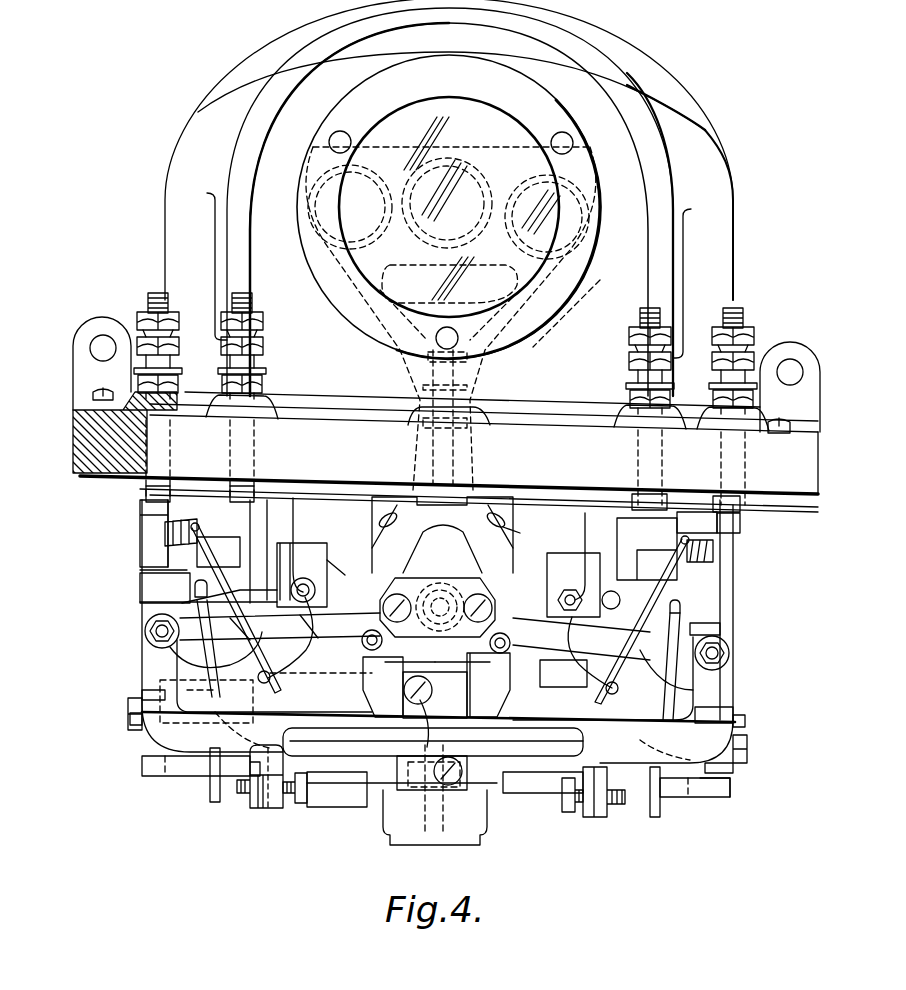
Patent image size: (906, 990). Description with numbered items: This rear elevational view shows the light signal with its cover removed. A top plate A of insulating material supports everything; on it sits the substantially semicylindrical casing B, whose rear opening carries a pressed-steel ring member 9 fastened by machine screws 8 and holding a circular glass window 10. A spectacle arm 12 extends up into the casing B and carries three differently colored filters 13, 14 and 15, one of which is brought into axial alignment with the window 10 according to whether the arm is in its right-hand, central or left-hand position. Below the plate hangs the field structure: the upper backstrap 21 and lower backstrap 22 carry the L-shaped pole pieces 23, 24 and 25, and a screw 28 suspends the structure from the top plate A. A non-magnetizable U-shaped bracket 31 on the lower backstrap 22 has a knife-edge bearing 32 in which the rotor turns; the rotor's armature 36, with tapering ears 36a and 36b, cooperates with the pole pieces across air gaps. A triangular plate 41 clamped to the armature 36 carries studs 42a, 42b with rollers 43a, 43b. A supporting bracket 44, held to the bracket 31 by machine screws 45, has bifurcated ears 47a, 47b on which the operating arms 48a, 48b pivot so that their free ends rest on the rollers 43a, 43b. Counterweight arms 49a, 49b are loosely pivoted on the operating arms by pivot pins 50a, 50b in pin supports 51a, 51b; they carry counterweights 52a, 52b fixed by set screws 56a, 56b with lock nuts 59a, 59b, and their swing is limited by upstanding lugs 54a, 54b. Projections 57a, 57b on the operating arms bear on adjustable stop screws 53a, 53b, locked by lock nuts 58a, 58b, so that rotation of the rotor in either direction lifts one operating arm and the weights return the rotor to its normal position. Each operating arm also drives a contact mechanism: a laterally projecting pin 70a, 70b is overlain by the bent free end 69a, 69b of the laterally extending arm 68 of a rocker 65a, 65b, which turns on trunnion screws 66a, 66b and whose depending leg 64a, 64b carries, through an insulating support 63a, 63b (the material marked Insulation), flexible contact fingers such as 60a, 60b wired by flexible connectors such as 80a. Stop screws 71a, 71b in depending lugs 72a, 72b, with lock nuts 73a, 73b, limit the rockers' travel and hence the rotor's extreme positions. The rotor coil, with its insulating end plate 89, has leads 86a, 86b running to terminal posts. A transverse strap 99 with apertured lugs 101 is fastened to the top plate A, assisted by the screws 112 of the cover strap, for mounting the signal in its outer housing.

The casing B is at (183, 172).
The top plate A is at (78, 462).
The machine screws 8 is at (345, 136).
The ring members 9 is at (553, 318).
The windows 10 is at (509, 132).
The spectacle arm 12 is at (470, 462).
The filter 13 is at (370, 246).
The filter 14 is at (484, 192).
The filter 15 is at (525, 260).
The backstrap 21 is at (688, 540).
The backstrap 22 is at (730, 790).
The pole piece 23 is at (617, 540).
The pole piece 24 is at (403, 548).
The pole piece 25 is at (563, 673).
The screw 28 is at (433, 462).
The bracket 31 is at (392, 830).
The knife-edge bearing 32 is at (438, 598).
The armature 36 is at (548, 718).
The ear 36a is at (350, 700).
The ear 36b is at (566, 754).
The triangular plate 41 is at (435, 695).
The stud 42a is at (378, 652).
The stud 42b is at (500, 655).
The roller 43a is at (413, 653).
The roller 43b is at (462, 653).
The supporting bracket 44 is at (495, 721).
The machine screws 45 is at (437, 768).
The bifurcated ear 47a is at (142, 694).
The bifurcated ear 47b is at (722, 772).
The operating arm 48a is at (280, 634).
The operating arm 48b is at (581, 643).
The counterweight arm 49a is at (383, 602).
The counterweight arm 49b is at (500, 592).
The pivot pin 50a is at (209, 582).
The pivot pin 50b is at (675, 599).
The pin supports 51a is at (165, 588).
The pin supports 51b is at (725, 627).
The counterweight 52a is at (298, 528).
The counterweight 52b is at (560, 560).
The stop screw 53a is at (128, 718).
The stop screw 53b is at (748, 750).
The upstanding lug 54a is at (145, 626).
The upstanding lug 54b is at (722, 640).
The set screw 56a is at (344, 563).
The set screw 56b is at (573, 585).
The projection 57a is at (242, 730).
The projection 57b is at (650, 751).
The lock nut 58a is at (150, 730).
The lock nut 58b is at (757, 714).
The lock nut 59a is at (304, 575).
The lock nut 59b is at (597, 600).
The contact finger 60a is at (200, 524).
The contact finger 60b is at (642, 620).
The insulating support 63a is at (270, 686).
The insulating support 63b is at (608, 696).
The depending leg 64a is at (205, 790).
The depending leg 64b is at (662, 800).
The rocker 65a is at (150, 620).
The rocker 65b is at (728, 665).
The trunnion screws 66a is at (145, 636).
The trunnion screws 66b is at (728, 653).
The laterally extending arm 68 is at (229, 594).
The free end 69a is at (290, 637).
The free end 69b is at (683, 615).
The pin 70a is at (204, 677).
The pin 70b is at (686, 686).
The stop screw 71a is at (304, 805).
The stop screw 71b is at (563, 805).
The depending lug 72a is at (272, 812).
The depending lug 72b is at (595, 818).
The lock nut 73a is at (255, 805).
The lock nut 73b is at (650, 815).
The flexible connector 80a is at (321, 662).
The coil lead 86a is at (378, 517).
The coil lead 86b is at (506, 520).
The insulating end plate 89 is at (526, 539).
The strap 99 is at (315, 410).
The apertured lugs 101 is at (105, 320).
The screws 112 is at (102, 392).
The insulation Insulation is at (150, 678).